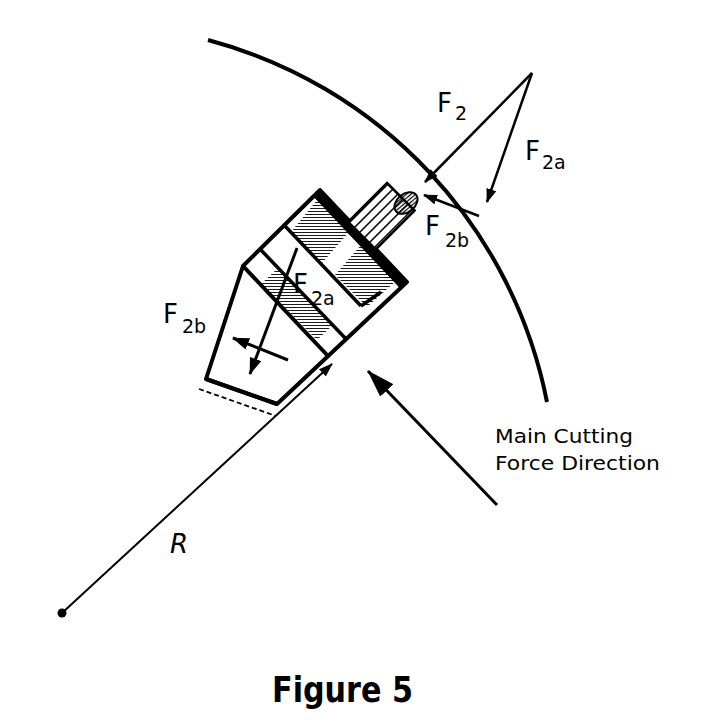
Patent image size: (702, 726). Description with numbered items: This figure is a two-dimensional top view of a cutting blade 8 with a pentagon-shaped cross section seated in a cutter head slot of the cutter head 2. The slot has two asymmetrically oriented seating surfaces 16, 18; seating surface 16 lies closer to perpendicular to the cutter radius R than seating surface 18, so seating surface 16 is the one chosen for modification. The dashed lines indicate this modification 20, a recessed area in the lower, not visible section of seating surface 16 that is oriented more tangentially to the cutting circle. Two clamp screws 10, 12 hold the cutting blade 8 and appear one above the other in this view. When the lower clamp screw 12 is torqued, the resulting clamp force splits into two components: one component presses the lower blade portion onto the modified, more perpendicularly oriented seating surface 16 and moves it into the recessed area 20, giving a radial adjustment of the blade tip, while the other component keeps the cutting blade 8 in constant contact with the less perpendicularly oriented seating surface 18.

The rotary cutting tool body 2 is at (278, 100).
The cutting blade 8 is at (278, 259).
The clamp screw 10 is at (377, 193).
The clamp screw 12 is at (404, 229).
The seating surface 16 is at (222, 402).
The seating surface 18 is at (223, 302).
The modification 20 is at (237, 407).